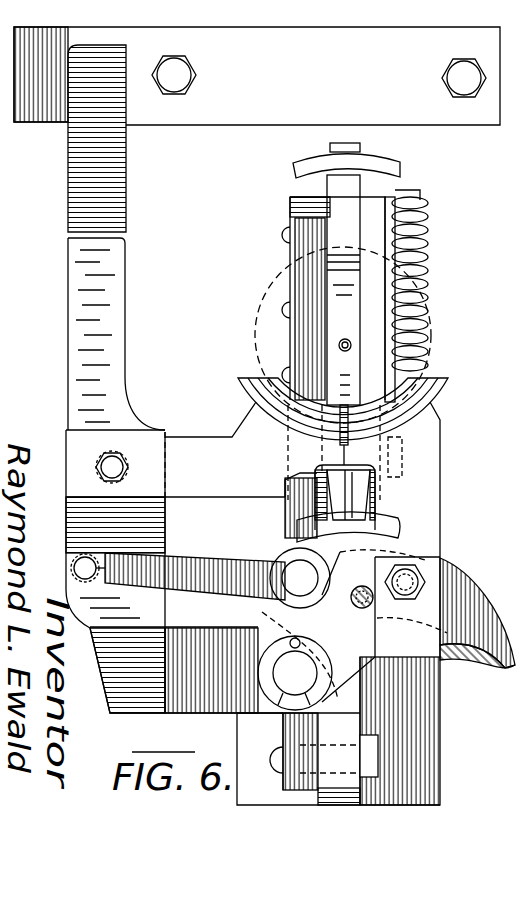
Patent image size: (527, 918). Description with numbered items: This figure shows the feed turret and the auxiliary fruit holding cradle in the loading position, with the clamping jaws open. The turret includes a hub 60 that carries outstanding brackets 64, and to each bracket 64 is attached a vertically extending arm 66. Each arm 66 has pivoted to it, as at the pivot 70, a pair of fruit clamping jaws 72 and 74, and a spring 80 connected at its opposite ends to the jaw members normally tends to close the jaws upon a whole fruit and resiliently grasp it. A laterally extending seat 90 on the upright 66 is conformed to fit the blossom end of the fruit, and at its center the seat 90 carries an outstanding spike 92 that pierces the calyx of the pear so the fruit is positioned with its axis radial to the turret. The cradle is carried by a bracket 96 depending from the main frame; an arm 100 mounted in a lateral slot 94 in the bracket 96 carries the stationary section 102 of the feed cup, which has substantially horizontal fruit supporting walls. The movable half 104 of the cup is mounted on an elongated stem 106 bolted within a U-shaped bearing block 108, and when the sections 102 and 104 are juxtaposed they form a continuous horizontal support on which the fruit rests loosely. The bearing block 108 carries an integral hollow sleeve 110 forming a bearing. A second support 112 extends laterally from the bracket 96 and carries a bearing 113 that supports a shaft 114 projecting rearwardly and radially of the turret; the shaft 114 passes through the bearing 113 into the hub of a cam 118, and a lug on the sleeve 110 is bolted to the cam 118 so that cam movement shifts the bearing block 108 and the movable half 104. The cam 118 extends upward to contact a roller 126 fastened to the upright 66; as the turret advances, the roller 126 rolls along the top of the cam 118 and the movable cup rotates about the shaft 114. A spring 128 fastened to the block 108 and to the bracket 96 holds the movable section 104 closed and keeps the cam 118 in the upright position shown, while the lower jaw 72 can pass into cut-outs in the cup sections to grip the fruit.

The hub 60 is at (420, 750).
The bracket 64 is at (355, 688).
The arm 66 is at (290, 513).
The pivot 70 is at (292, 206).
The lower fruit clamping jaw 72 is at (365, 505).
The fruit clamping jaw 74 is at (398, 166).
The spring 80 is at (430, 246).
The seat 90 is at (330, 300).
The spike 92 is at (350, 342).
The lateral slot 94 is at (130, 430).
The bracket 96 is at (108, 264).
The arm 100 is at (190, 445).
The stationary section 102 is at (250, 376).
The movable half 104 is at (443, 378).
The stem 106 is at (420, 532).
The bearing block 108 is at (440, 567).
The sleeve 110 is at (275, 692).
The second support 112 is at (185, 700).
The bearing 113 is at (325, 697).
The shaft 114 is at (262, 660).
The cam 118 is at (495, 643).
The roller 126 is at (278, 563).
The spring 128 is at (180, 563).